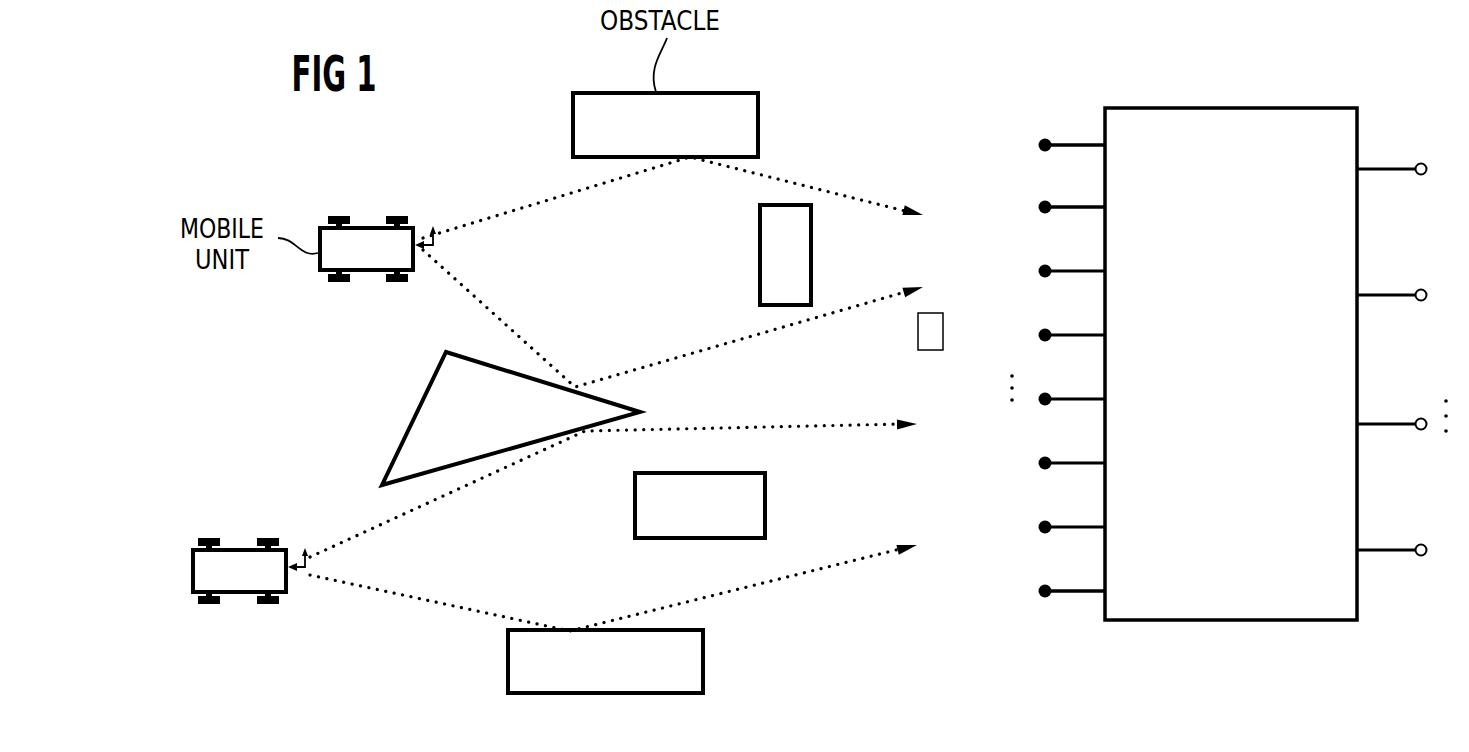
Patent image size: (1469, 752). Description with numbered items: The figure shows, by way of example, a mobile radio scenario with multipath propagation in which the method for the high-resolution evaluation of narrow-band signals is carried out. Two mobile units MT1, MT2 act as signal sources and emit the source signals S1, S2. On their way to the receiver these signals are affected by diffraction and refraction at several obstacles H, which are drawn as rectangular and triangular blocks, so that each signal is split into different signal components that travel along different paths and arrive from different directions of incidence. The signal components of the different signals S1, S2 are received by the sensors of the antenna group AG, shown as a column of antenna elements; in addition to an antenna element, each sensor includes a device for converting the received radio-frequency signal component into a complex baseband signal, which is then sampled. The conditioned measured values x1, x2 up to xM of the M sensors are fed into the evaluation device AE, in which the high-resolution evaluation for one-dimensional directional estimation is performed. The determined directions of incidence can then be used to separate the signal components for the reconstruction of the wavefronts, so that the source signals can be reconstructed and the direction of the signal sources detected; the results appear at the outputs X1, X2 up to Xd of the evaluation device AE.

The mobile unit MT1 is at (378, 249).
The mobile unit MT2 is at (250, 571).
The obstacle H is at (596, 393).
The signal S1 is at (673, 272).
The signal S2 is at (614, 525).
The antenna group AG is at (1062, 434).
The evaluation device AE is at (1231, 364).
The signal component x1 is at (1050, 148).
The signal component x2 is at (1050, 209).
The signal component xM is at (1049, 591).
The output signal X1 is at (1411, 171).
The output signal X2 is at (1411, 297).
The output signal Xd is at (1411, 552).